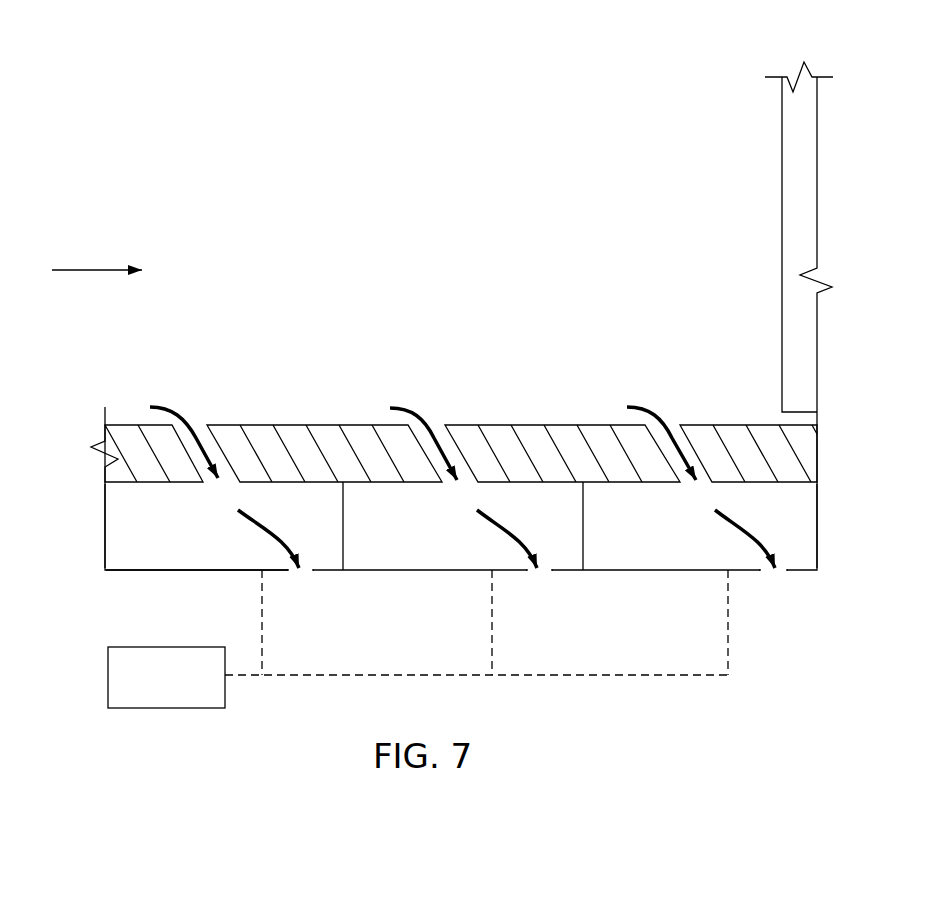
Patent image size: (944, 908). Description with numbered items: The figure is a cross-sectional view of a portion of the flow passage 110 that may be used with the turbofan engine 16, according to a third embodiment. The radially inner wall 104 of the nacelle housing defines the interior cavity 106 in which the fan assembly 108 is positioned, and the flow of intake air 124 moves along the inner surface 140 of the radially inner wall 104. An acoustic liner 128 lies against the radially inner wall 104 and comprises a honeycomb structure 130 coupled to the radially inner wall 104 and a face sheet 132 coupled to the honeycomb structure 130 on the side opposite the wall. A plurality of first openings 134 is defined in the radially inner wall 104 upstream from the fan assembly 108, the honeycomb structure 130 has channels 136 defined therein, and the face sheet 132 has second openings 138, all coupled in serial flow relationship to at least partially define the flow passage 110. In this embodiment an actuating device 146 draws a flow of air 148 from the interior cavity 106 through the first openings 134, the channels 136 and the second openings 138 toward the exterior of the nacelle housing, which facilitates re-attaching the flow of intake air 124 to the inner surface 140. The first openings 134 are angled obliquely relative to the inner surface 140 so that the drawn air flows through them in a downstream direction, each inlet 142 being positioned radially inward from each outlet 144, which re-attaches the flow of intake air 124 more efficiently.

The turbofan engine 16 is at (182, 51).
The radially inner wall 104 is at (75, 450).
The interior cavity 106 is at (363, 287).
The fan assembly 108 is at (752, 160).
The flow passage 110 is at (842, 595).
The flow of intake air 124 is at (105, 268).
The acoustic liner 128 is at (82, 549).
The honeycomb structure 130 is at (105, 515).
The face sheet 132 is at (205, 572).
The first openings 134 is at (207, 425).
The channels 136 is at (158, 565).
The second openings 138 is at (317, 594).
The inner surface 140 is at (120, 423).
The inlet 142 is at (192, 408).
The outlet 144 is at (207, 498).
The actuating device 146 is at (107, 680).
The flow of air 148 is at (299, 519).